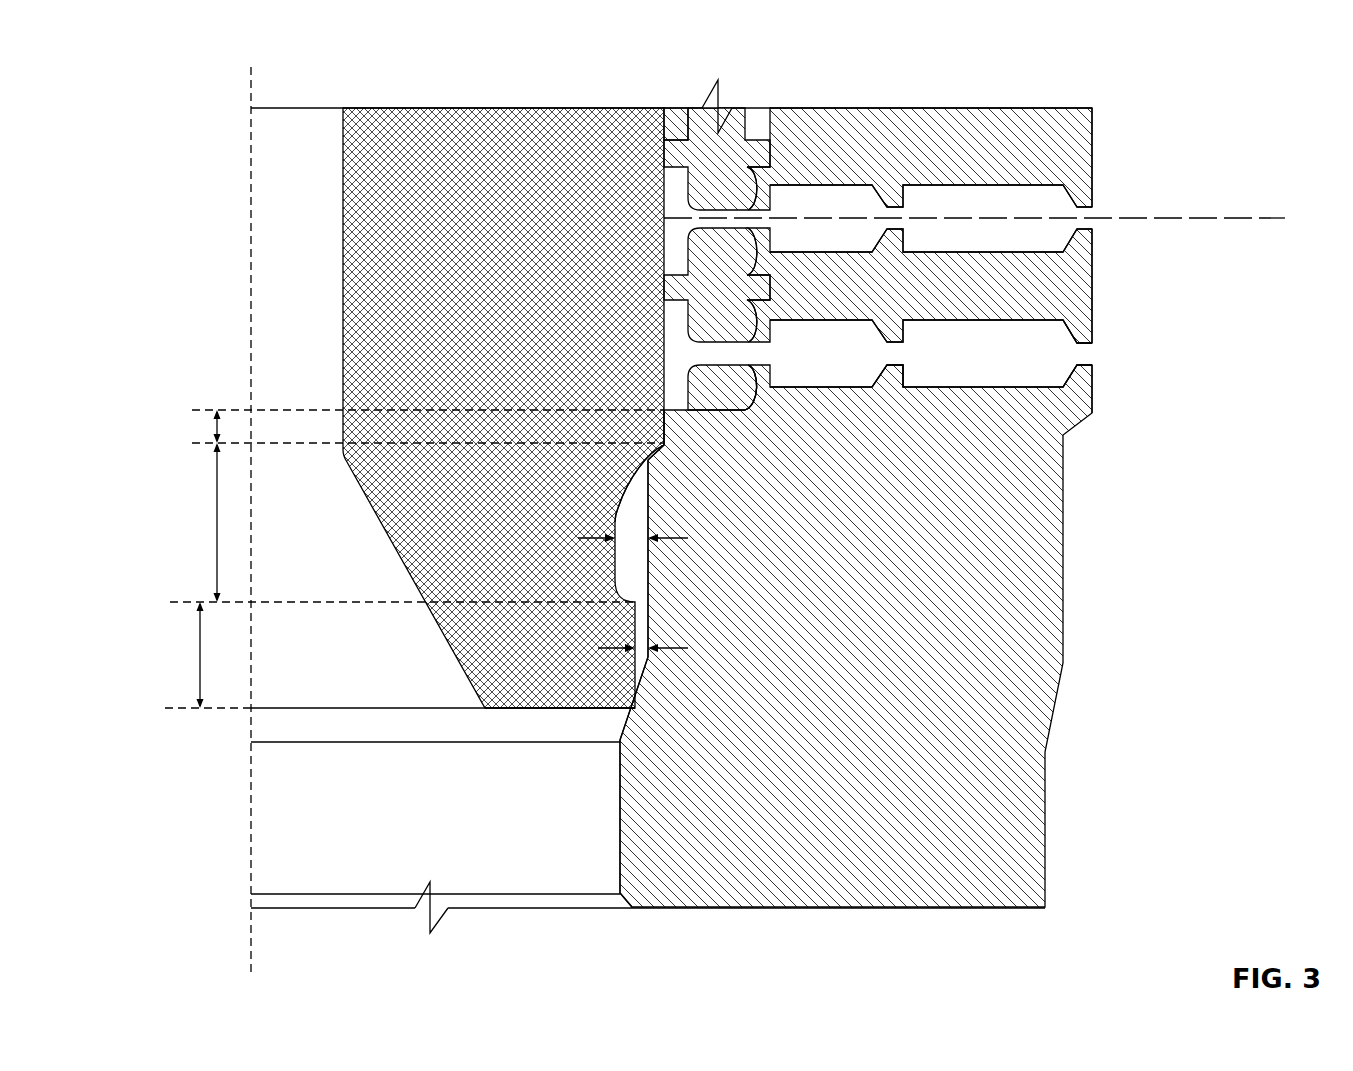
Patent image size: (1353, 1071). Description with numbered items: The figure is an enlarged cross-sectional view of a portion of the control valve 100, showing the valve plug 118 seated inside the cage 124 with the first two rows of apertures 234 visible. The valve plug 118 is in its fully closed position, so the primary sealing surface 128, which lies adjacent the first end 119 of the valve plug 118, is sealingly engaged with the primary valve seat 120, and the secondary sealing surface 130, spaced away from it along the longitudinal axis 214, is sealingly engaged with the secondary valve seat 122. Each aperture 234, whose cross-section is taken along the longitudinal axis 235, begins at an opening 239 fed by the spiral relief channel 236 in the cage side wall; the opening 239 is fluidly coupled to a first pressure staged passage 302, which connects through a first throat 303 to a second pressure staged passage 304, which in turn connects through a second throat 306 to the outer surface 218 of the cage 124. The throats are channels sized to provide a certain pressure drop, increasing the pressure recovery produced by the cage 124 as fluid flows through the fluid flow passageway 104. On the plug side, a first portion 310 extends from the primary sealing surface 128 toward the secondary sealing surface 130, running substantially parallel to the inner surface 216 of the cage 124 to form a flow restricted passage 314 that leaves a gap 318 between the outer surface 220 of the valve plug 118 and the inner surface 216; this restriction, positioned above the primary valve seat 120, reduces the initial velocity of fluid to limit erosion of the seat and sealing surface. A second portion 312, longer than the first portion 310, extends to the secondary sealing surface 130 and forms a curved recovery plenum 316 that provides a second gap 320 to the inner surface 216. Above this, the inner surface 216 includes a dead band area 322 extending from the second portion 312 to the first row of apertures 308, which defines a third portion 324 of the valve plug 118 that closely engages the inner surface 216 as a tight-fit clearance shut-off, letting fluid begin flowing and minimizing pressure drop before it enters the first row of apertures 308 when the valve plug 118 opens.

The control valve 100 is at (167, 164).
The fluid flow passageway 104 is at (452, 837).
The valve plug 118 is at (522, 266).
The first end of the valve plug 119 is at (528, 708).
The primary valve seat 120 is at (632, 718).
The secondary valve seat 122 is at (660, 453).
The cage 124 is at (899, 616).
The primary sealing surface 128 is at (635, 706).
The secondary sealing surface 130 is at (655, 456).
The longitudinal axis 214 is at (250, 944).
The inner surface of the cage 216 is at (648, 602).
The outer surface of the cage 218 is at (1093, 186).
The outer surface of the valve plug 220 is at (665, 203).
The apertures 234 is at (1012, 198).
The longitudinal axis of the apertures 235 is at (1228, 218).
The spiral relief channel 236 is at (680, 352).
The opening of the aperture 239 is at (737, 358).
The first pressure staged passage 302 is at (845, 366).
The first throat 303 is at (892, 356).
The second pressure staged passage 304 is at (1002, 366).
The second throat 306 is at (1085, 353).
The first row of apertures 308 is at (1118, 364).
The first portion of the valve plug 310 is at (197, 655).
The second portion of the valve plug 312 is at (214, 511).
The flow restricted passage 314 is at (643, 640).
The recovery plenum 316 is at (630, 550).
The gap 318 is at (672, 648).
The second gap 320 is at (672, 532).
The dead band area 322 is at (214, 427).
The third portion of the valve plug 324 is at (667, 430).